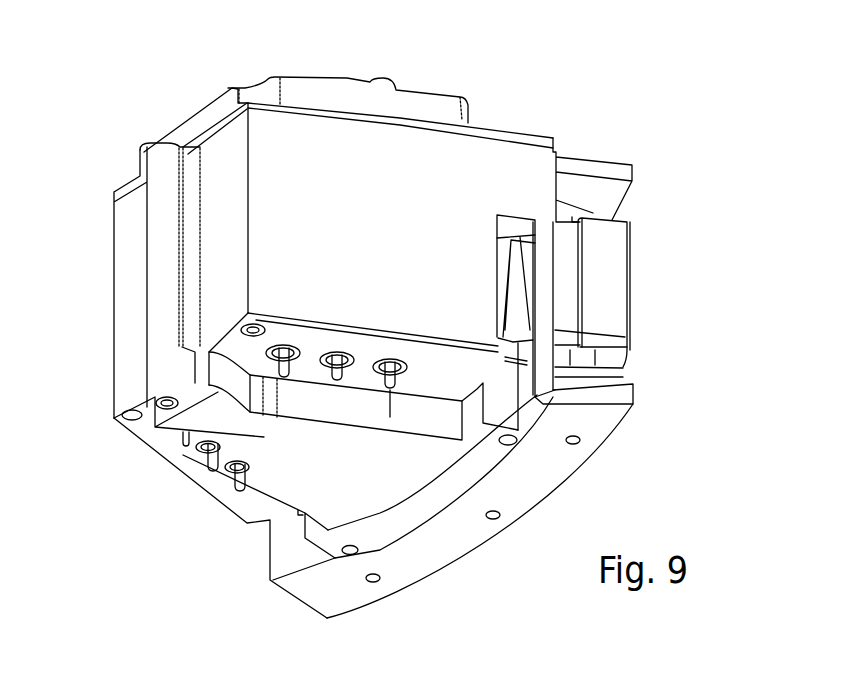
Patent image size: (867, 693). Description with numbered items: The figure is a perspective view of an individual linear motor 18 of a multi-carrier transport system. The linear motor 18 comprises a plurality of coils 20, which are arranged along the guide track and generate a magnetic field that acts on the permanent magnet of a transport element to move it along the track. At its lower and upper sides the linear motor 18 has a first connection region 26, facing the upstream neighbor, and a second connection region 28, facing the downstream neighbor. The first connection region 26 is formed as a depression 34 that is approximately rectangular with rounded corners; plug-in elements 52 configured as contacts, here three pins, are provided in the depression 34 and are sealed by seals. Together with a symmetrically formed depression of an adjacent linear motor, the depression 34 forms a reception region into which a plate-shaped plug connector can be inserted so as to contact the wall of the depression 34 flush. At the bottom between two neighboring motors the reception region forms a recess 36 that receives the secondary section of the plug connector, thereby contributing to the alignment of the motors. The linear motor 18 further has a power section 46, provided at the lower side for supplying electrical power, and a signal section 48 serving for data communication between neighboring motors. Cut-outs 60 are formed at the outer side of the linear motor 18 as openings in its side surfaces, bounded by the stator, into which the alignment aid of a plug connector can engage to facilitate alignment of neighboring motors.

The linear motor 18 is at (425, 178).
The signal section 48 is at (318, 124).
The recess 36 is at (237, 350).
The first connection region 26 is at (315, 350).
The plug-in elements 52 is at (285, 378).
The cut-outs 60 is at (520, 313).
The coils 20 is at (613, 267).
The depression 34 is at (167, 448).
The second connection region 28 is at (197, 466).
The power section 46 is at (520, 483).